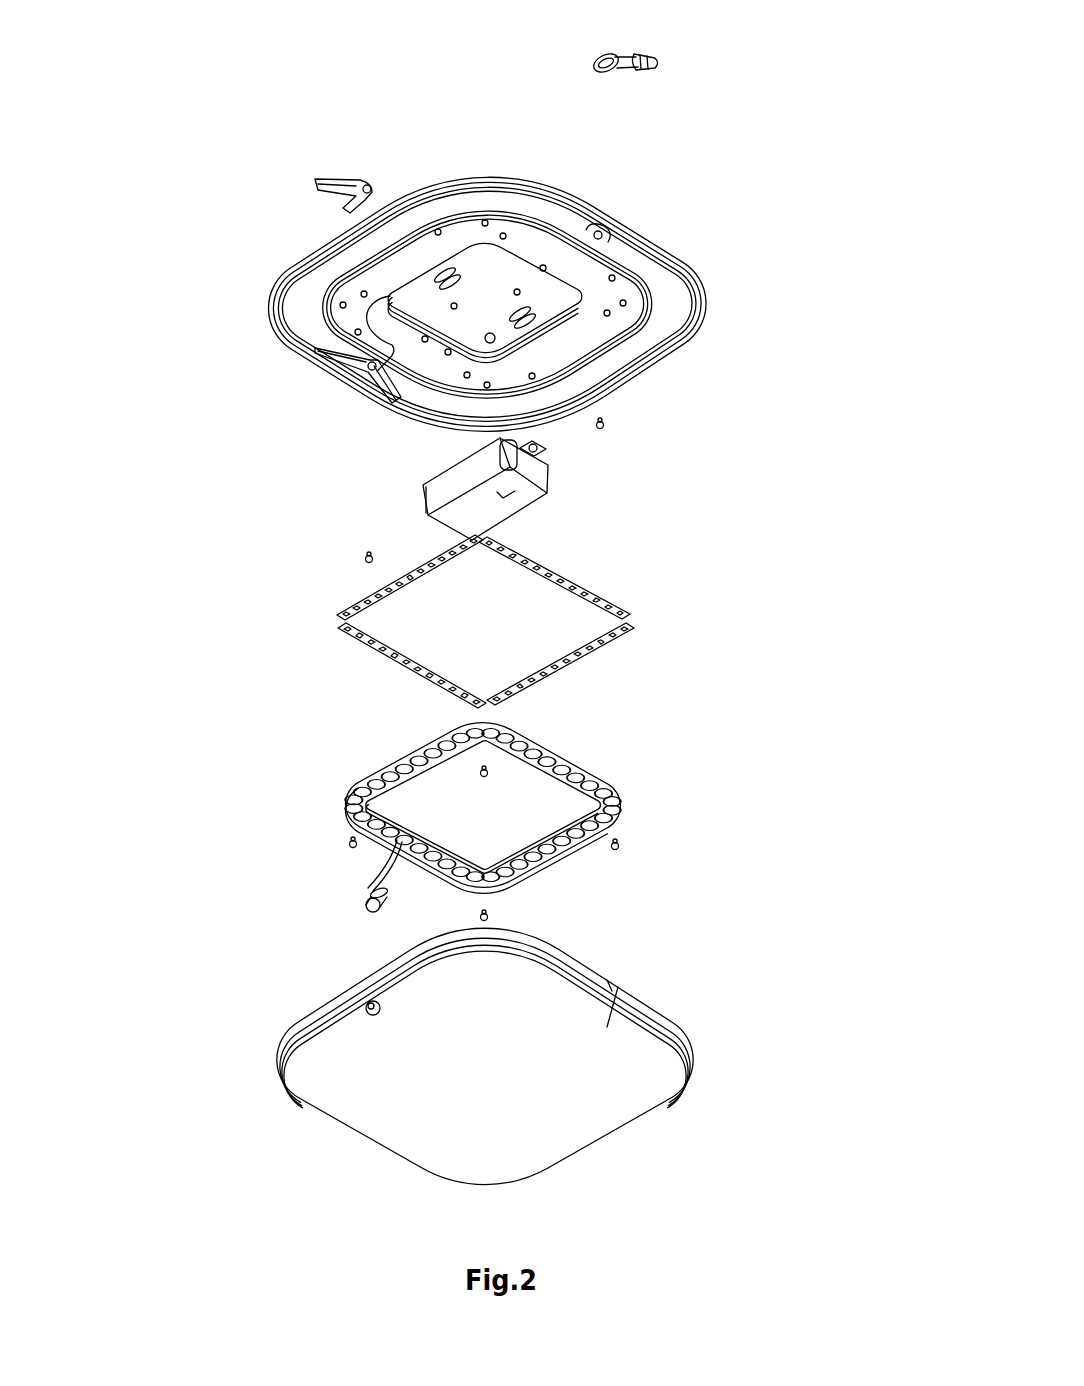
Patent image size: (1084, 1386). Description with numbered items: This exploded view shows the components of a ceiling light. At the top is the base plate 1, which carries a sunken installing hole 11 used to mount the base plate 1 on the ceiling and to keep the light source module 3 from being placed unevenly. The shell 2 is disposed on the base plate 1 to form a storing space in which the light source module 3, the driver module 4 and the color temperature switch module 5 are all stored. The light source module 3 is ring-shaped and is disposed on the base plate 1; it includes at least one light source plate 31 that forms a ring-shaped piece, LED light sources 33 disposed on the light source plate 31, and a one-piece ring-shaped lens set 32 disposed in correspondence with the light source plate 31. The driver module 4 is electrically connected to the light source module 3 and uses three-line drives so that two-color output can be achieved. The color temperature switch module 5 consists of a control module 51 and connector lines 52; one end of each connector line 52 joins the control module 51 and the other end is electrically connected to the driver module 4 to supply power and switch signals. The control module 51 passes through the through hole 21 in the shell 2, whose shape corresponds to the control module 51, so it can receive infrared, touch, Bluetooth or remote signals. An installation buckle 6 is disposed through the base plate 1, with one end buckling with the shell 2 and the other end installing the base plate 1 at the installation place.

The base plate 1 is at (673, 295).
The installing hole 11 is at (350, 380).
The shell 2 is at (523, 1036).
The through hole 21 is at (373, 1002).
The light source module 3 is at (488, 679).
The light source plate 31 is at (570, 580).
The lens set 32 is at (592, 767).
The LED light source 33 is at (607, 600).
The driver module 4 is at (533, 453).
The color temperature switch module 5 is at (302, 842).
The control module 51 is at (368, 895).
The connector line 52 is at (396, 843).
The installation buckle 6 is at (655, 63).